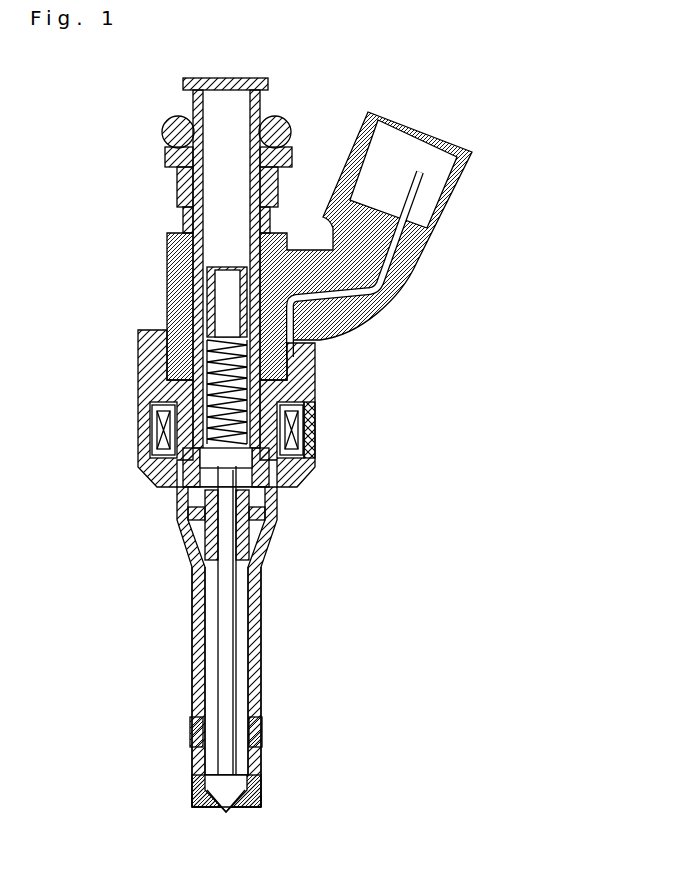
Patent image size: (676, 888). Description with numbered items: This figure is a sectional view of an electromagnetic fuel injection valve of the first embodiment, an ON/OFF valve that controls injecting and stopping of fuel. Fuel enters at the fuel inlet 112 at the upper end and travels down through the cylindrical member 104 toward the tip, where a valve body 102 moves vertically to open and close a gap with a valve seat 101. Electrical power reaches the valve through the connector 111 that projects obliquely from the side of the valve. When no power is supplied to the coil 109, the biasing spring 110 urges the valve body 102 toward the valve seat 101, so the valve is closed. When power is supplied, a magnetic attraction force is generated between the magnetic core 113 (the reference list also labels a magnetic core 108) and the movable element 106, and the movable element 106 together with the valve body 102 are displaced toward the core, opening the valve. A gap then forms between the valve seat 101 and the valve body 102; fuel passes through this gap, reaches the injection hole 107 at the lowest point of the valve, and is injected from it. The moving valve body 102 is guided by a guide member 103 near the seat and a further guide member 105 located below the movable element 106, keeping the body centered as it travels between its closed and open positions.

The valve seat 101 is at (207, 807).
The valve body 102 is at (227, 585).
The guide member 103 is at (250, 777).
The cylindrical member 104 is at (198, 637).
The guide member 105 is at (277, 510).
The movable element 106 is at (177, 497).
The injection hole 107 is at (237, 808).
The magnetic core 108 is at (138, 437).
The coil 109 is at (317, 395).
The biasing spring 110 is at (300, 358).
The connector 111 is at (430, 250).
The fuel inlet 112 is at (232, 202).
The magnetic core 113 is at (303, 428).